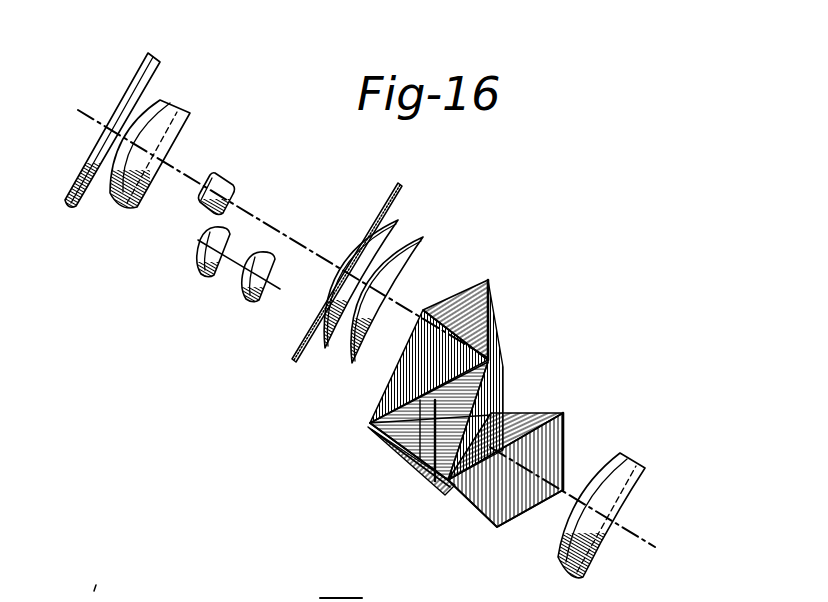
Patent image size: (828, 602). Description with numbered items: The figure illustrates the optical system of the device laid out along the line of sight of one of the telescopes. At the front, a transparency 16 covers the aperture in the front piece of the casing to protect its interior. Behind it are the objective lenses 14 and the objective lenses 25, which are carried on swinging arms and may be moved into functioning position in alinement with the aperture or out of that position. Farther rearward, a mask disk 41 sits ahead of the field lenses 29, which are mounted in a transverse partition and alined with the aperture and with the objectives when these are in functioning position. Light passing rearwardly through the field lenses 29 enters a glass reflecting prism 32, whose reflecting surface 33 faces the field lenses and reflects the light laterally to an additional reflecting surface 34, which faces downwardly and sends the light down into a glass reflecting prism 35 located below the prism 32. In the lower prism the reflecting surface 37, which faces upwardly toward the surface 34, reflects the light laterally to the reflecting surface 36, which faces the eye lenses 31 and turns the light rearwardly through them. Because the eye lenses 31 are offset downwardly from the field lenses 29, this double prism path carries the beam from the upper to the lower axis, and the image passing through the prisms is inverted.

The objective lenses 14 is at (180, 90).
The transparencies 16 is at (161, 57).
The objective lenses 25 is at (237, 317).
The field lenses 29 is at (403, 213).
The eye lenses 31 is at (640, 463).
The glass reflecting prisms 32 is at (493, 260).
The reflecting surfaces 33 is at (493, 338).
The reflecting surfaces 34 is at (402, 383).
The glass reflecting prisms 35 is at (567, 413).
The reflecting surfaces 36 is at (535, 407).
The reflecting surfaces 37 is at (408, 463).
The mask disks 41 is at (398, 183).